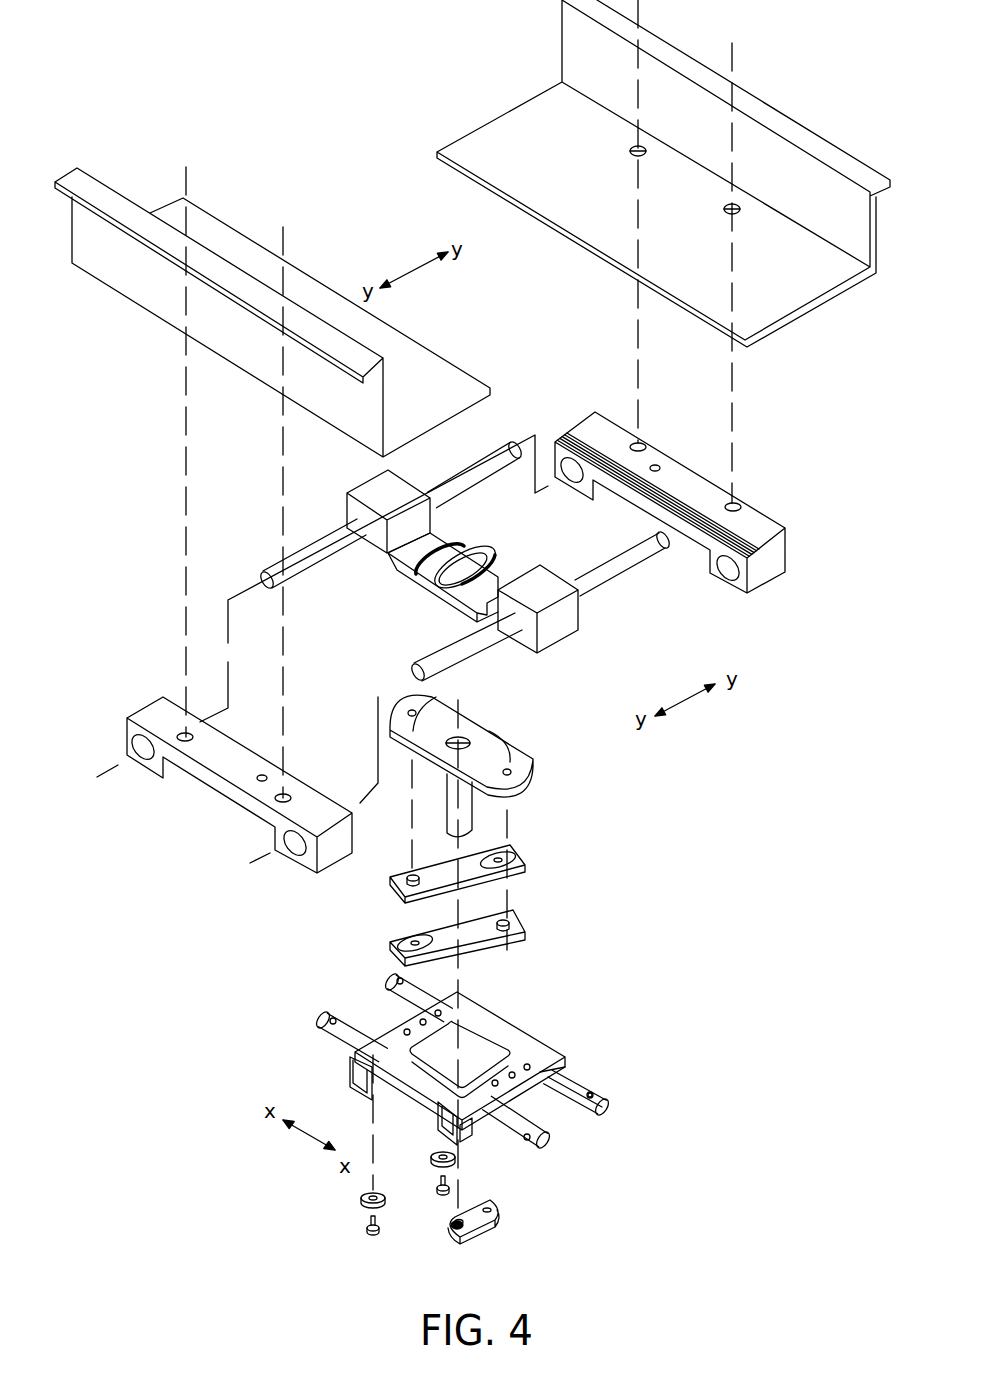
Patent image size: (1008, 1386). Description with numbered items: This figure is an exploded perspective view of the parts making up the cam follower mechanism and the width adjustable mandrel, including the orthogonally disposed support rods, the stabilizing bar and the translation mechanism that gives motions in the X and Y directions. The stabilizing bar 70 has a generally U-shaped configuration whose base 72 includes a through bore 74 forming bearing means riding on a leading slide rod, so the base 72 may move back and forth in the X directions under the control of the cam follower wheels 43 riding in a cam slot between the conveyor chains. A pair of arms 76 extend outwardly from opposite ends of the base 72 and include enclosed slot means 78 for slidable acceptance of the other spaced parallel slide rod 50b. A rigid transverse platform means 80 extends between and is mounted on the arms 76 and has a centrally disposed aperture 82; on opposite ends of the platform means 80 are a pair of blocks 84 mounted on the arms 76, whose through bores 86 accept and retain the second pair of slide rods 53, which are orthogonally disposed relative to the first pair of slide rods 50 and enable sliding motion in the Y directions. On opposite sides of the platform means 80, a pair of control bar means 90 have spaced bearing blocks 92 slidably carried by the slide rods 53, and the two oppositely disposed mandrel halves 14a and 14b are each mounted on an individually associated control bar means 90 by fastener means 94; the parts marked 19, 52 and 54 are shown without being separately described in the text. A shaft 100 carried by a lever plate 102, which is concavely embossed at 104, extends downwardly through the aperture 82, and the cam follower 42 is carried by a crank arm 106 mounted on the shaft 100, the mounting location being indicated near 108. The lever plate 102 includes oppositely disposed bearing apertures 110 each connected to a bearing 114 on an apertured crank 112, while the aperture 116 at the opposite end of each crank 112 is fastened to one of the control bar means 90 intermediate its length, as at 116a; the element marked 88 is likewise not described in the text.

The mandrel half 14a is at (668, 263).
The mandrel half 14b is at (237, 260).
The rail 19 is at (472, 228).
The cam follower 42 is at (493, 1233).
The cam follower wheel 43 is at (433, 1154).
The slide rod 50 is at (603, 1085).
The slide rod 50b is at (540, 1147).
The rod 52 is at (318, 1021).
The slide rod 53 is at (517, 448).
The hole 54 is at (592, 1095).
The stabilizing bar 70 is at (460, 1058).
The base 72 is at (463, 1008).
The through bore 74 is at (567, 1073).
The arm 76 is at (388, 1038).
The enclosed slot means 78 is at (387, 1107).
The transverse platform means 80 is at (403, 590).
The aperture 82 is at (480, 563).
The block 84 is at (407, 492).
The through bore 86 is at (348, 520).
The spring end 88 is at (457, 545).
The control bar means 90 is at (703, 483).
The bearing block 92 is at (557, 443).
The fastener means 94 is at (648, 447).
The shaft 100 is at (445, 826).
The lever plate 102 is at (513, 760).
The concave embossment 104 is at (477, 740).
The crank arm 106 is at (480, 1203).
The screw 108 is at (455, 1220).
The bearing aperture 110 is at (412, 710).
The apertured crank 112 is at (415, 893).
The bearing 114 is at (408, 878).
The aperture 116 is at (516, 857).
The fastening point 116a is at (650, 477).